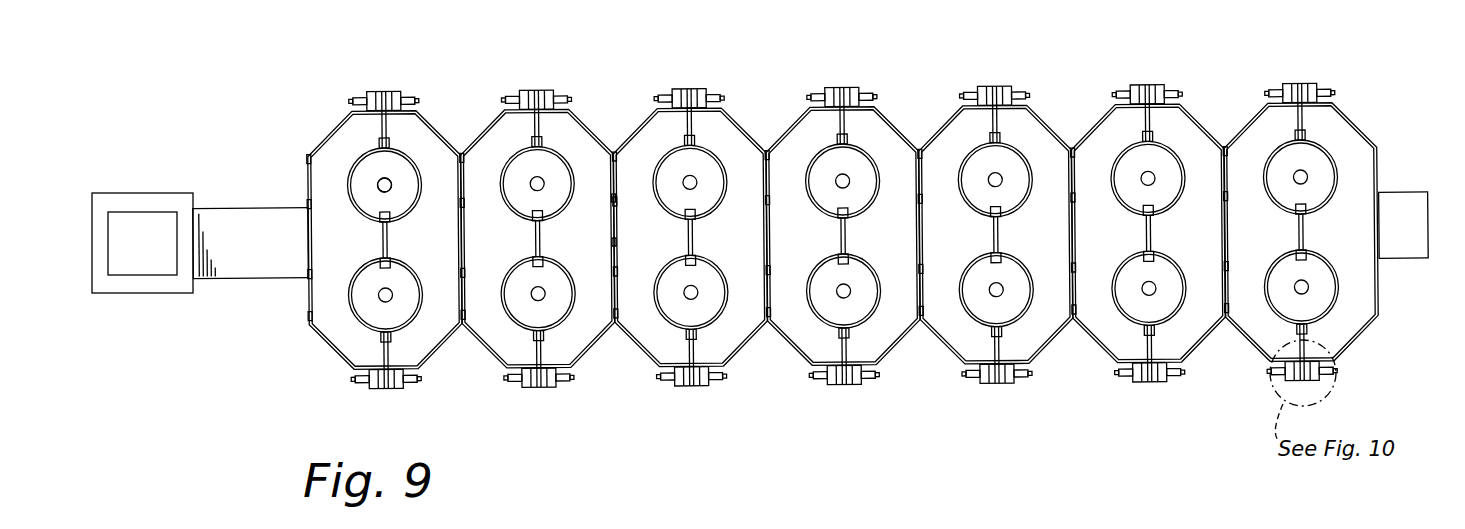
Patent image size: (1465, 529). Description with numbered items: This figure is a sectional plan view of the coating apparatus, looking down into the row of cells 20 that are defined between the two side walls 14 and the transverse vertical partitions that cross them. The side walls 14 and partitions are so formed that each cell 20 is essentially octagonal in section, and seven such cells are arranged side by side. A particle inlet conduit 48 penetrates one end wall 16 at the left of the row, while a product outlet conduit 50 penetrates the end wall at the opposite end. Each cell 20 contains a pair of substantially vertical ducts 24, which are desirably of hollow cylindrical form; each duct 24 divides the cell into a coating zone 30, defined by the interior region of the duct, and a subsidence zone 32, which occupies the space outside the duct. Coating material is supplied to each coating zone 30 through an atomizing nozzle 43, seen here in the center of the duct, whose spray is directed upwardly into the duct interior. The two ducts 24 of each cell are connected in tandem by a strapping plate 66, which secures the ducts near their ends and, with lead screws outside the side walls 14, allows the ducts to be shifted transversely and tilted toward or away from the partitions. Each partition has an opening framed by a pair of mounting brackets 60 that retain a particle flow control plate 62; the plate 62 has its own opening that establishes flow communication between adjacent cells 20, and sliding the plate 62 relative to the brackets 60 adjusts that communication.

The side walls 14 is at (572, 108).
The end wall 16 is at (303, 172).
The cell 20 is at (1020, 130).
The duct 24 is at (722, 160).
The coating zone 30 is at (403, 166).
The subsidence zone 32 is at (334, 327).
The atomizing nozzle 43 is at (392, 190).
The particle inlet conduit 48 is at (238, 268).
The product outlet conduit 50 is at (1401, 197).
The mounting brackets 60 is at (617, 200).
The particle flow control plate 62 is at (617, 245).
The strapping plate 66 is at (696, 352).